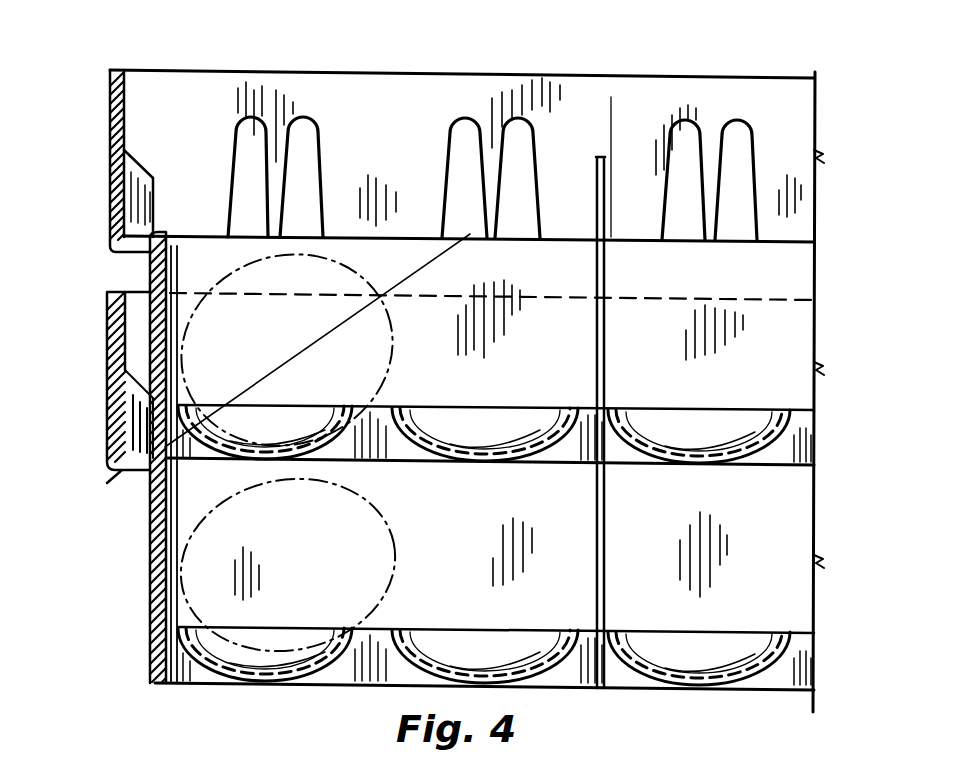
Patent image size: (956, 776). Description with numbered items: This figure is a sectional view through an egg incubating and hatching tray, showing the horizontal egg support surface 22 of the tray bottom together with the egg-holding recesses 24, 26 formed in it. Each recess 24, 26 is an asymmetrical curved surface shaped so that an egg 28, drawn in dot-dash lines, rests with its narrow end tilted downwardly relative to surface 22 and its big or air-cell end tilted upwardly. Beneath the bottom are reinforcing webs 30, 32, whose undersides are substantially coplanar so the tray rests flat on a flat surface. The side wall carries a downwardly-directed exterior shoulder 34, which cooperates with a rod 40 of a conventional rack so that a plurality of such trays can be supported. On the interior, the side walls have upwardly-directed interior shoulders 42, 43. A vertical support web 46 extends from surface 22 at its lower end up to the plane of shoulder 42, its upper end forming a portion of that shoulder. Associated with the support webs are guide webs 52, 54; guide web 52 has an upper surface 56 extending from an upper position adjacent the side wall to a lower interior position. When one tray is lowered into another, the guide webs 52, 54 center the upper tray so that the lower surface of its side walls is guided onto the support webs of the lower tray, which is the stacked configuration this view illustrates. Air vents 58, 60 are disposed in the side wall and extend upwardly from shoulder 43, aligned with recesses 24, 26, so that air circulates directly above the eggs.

The horizontal egg support surface 22 is at (612, 410).
The egg-holding recess 24 is at (312, 412).
The egg-holding recess 26 is at (500, 443).
The egg 28 is at (153, 270).
The reinforcing web 30 is at (363, 461).
The reinforcing web 32 is at (400, 461).
The downwardly-directed exterior shoulder 34 is at (130, 249).
The rod 40 is at (606, 293).
The upwardly-directed interior shoulder 42 is at (113, 203).
The upwardly-directed interior shoulder 43 is at (796, 240).
The vertical support web 46 is at (178, 327).
The guide web 52 is at (150, 173).
The guide web 54 is at (597, 205).
The upper surface 56 is at (128, 155).
The air vent 58 is at (252, 117).
The air vent 60 is at (303, 118).